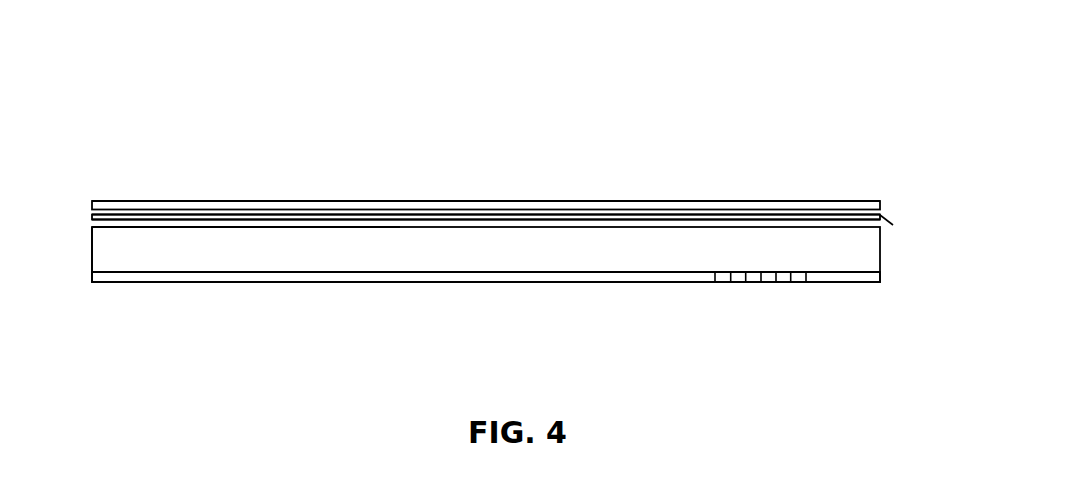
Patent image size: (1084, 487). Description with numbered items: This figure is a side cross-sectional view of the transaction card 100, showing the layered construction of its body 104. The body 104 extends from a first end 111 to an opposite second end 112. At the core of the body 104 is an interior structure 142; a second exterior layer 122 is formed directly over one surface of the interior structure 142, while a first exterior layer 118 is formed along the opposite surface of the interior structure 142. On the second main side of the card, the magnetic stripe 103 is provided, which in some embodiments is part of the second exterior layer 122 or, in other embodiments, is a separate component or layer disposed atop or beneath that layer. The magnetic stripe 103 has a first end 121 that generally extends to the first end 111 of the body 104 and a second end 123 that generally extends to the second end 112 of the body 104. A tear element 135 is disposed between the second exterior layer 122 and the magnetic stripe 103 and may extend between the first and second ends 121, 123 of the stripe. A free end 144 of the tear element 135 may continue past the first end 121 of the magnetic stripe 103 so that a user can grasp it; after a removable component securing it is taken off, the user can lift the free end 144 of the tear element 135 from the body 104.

The card 100 is at (150, 63).
The magnetic stripe 103 is at (584, 203).
The body 104 is at (168, 248).
The first end 111 is at (880, 248).
The second end 112 is at (92, 252).
The first exterior layer 118 is at (578, 278).
The first end 121 is at (825, 203).
The second exterior layer 122 is at (310, 227).
The second end 123 is at (163, 199).
The tear element 135 is at (707, 215).
The interior structure 142 is at (352, 263).
The free end 144 is at (892, 213).